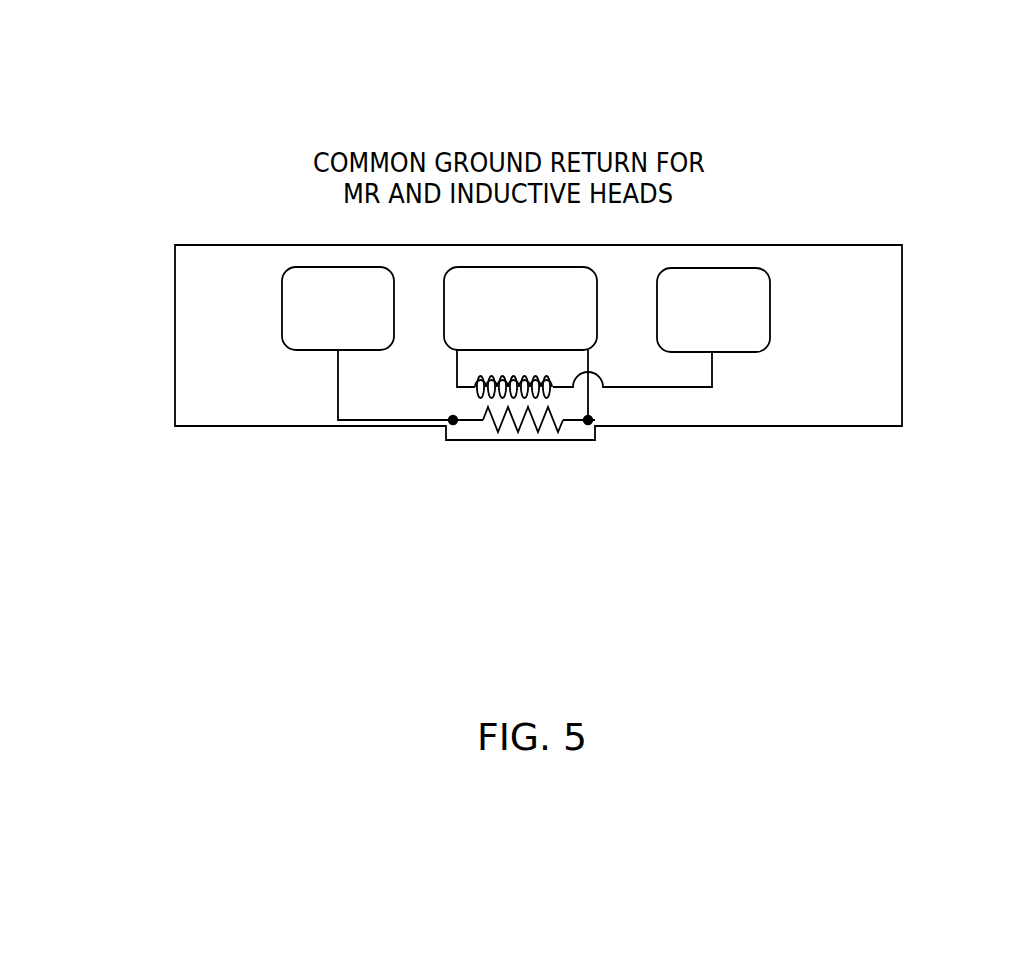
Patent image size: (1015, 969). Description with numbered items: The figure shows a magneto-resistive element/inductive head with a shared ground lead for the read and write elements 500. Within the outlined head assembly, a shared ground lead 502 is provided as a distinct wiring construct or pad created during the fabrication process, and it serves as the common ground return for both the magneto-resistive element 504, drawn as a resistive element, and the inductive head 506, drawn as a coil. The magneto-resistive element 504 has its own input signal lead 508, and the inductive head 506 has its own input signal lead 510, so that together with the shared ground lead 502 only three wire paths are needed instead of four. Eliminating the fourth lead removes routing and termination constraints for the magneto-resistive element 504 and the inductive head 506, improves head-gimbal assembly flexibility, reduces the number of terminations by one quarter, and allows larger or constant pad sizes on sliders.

The magneto-resistive element/inductive head with shared ground lead 500 is at (770, 168).
The shared ground lead 502 is at (582, 337).
The magneto-resistive element 504 is at (482, 420).
The inductive head 506 is at (547, 387).
The input signal lead 508 is at (307, 277).
The input signal lead 510 is at (757, 297).